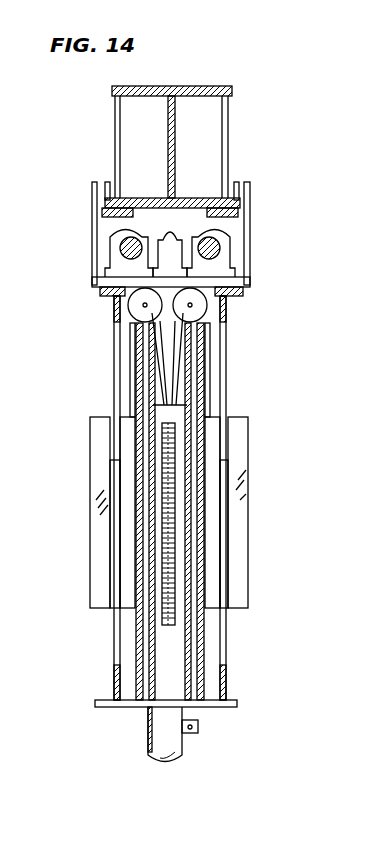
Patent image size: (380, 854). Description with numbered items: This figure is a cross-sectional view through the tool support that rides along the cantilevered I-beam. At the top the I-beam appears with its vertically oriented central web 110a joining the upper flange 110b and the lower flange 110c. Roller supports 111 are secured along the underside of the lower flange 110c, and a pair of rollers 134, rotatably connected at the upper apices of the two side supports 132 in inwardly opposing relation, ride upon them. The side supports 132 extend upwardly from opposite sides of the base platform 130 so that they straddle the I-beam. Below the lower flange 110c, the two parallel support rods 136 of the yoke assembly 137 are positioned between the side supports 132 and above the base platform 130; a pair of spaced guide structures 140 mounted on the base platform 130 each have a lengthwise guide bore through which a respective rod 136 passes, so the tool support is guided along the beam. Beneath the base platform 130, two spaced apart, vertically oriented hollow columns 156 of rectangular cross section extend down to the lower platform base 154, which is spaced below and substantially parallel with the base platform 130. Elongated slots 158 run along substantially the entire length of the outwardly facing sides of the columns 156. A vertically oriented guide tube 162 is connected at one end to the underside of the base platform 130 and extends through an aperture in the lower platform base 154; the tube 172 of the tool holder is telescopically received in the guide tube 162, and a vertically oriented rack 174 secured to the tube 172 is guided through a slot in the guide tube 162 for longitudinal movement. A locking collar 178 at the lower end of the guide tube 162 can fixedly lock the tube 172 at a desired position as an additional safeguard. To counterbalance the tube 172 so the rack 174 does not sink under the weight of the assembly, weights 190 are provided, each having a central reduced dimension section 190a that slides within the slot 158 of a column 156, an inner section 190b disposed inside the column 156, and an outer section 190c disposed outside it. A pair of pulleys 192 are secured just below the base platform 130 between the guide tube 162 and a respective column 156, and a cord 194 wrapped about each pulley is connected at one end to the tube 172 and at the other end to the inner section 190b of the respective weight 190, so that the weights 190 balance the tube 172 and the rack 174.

The central web 110a is at (174, 160).
The upper flange 110b is at (207, 86).
The lower flange 110c is at (135, 198).
The roller supports 111 is at (122, 214).
The base platform 130 is at (100, 290).
The side supports 132 is at (95, 204).
The rollers 134 is at (107, 182).
The support rods 136 is at (120, 247).
The yoke assembly 137 is at (191, 247).
The guide structures 140 is at (170, 232).
The lower platform base 154 is at (230, 707).
The columns 156 is at (117, 688).
The elongated slots 158 is at (117, 668).
The guide tube 162 is at (150, 720).
The tube 172 is at (165, 746).
The rack 174 is at (165, 600).
The locking collar 178 is at (196, 730).
The weights 190 is at (178, 495).
The central reduced dimension section 190a is at (115, 490).
The inner section 190b is at (120, 548).
The outer section 190c is at (100, 456).
The pulleys 192 is at (132, 304).
The cord 194 is at (140, 350).